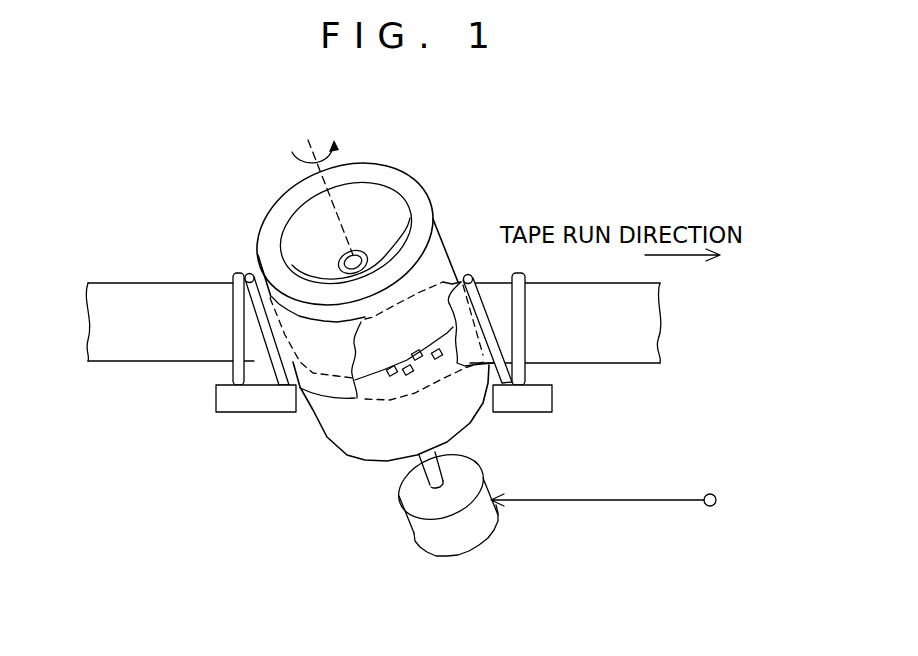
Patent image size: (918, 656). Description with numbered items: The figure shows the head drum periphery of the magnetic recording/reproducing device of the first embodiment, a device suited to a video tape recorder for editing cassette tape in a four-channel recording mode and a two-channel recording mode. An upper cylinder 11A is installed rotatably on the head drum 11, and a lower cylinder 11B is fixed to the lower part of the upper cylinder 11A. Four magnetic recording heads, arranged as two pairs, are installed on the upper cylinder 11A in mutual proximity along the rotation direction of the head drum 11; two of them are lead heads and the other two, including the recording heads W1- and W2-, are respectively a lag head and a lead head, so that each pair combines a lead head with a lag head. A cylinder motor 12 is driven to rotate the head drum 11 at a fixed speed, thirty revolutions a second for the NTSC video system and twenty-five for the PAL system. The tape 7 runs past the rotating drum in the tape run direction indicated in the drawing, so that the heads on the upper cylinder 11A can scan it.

The magnetic tape 7 is at (660, 340).
The head drum 11 is at (347, 329).
The upper cylinder 11A is at (437, 228).
The lower cylinder 11B is at (343, 437).
The cylinder motor 12 is at (492, 540).
The magnetic recording head W1- is at (406, 376).
The magnetic recording head W2- is at (440, 360).